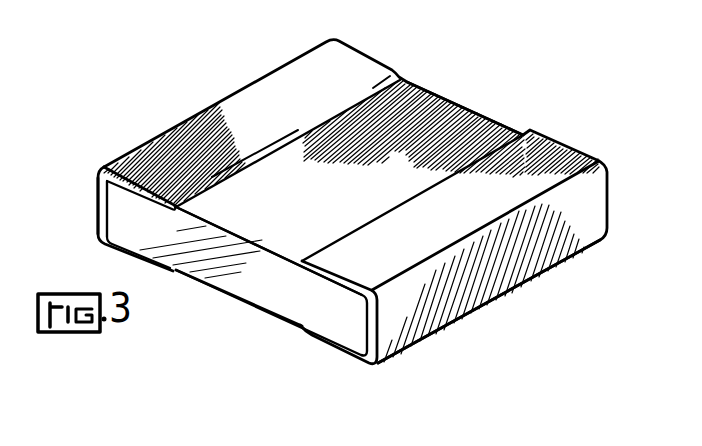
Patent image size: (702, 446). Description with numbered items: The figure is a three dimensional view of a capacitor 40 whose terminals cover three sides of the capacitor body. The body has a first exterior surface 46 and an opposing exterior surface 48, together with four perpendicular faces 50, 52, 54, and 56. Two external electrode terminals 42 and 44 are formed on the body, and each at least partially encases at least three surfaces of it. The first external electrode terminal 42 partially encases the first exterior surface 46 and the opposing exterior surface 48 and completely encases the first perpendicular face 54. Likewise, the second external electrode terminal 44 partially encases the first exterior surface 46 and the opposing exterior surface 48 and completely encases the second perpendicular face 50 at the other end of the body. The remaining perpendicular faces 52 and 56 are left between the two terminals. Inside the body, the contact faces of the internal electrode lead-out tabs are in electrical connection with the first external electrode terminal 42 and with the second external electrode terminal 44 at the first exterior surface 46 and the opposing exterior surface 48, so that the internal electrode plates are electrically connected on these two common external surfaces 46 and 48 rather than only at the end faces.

The capacitor 40 is at (447, 68).
The first external electrode terminal 42 is at (234, 107).
The second external electrode terminal 44 is at (576, 160).
The first exterior surface 46 is at (278, 322).
The opposing exterior surface 48 is at (470, 132).
The second perpendicular face 50 is at (489, 277).
The perpendicular face 52 is at (233, 258).
The first perpendicular face 54 is at (452, 103).
The perpendicular face 56 is at (93, 209).